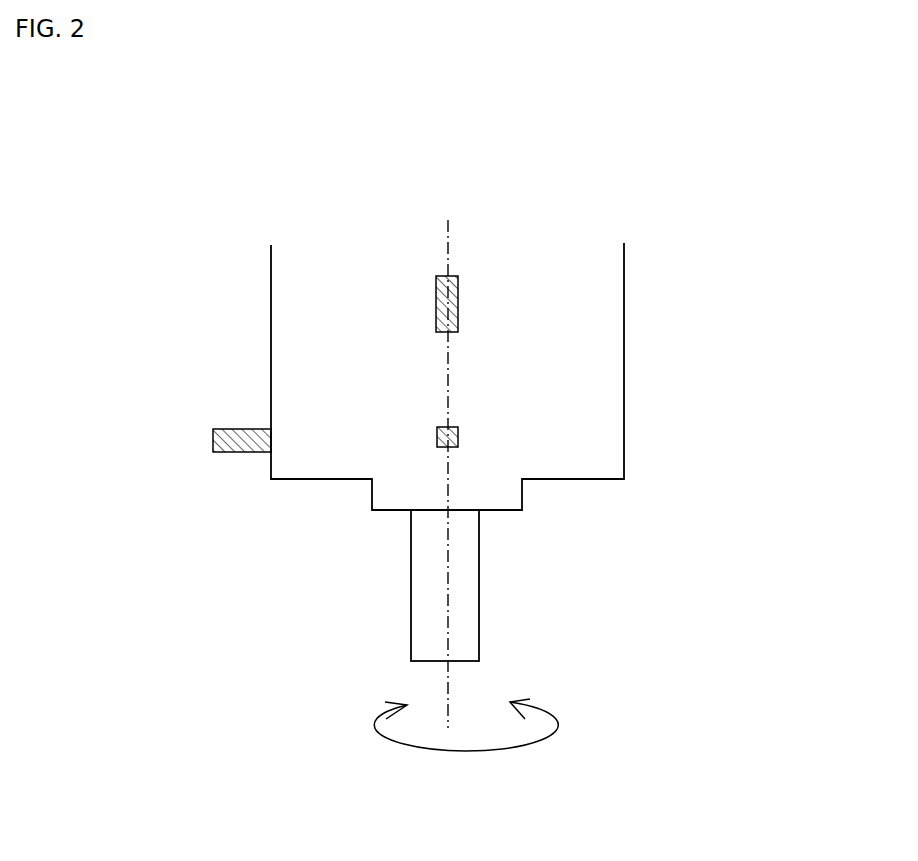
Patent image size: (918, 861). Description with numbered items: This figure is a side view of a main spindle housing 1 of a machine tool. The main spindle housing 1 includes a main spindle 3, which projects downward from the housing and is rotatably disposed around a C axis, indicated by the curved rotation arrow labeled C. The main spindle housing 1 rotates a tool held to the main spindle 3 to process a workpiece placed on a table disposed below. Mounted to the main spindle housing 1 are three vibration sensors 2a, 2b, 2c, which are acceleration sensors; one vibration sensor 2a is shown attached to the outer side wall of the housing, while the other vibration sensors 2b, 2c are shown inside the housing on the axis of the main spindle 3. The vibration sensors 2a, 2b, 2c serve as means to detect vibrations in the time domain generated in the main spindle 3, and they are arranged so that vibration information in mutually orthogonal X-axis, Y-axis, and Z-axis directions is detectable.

The main spindle housing 1 is at (288, 364).
The vibration sensor 2a is at (213, 436).
The vibration sensor 2b is at (458, 430).
The vibration sensor 2c is at (458, 312).
The main spindle 3 is at (423, 612).
The C axis C is at (466, 741).